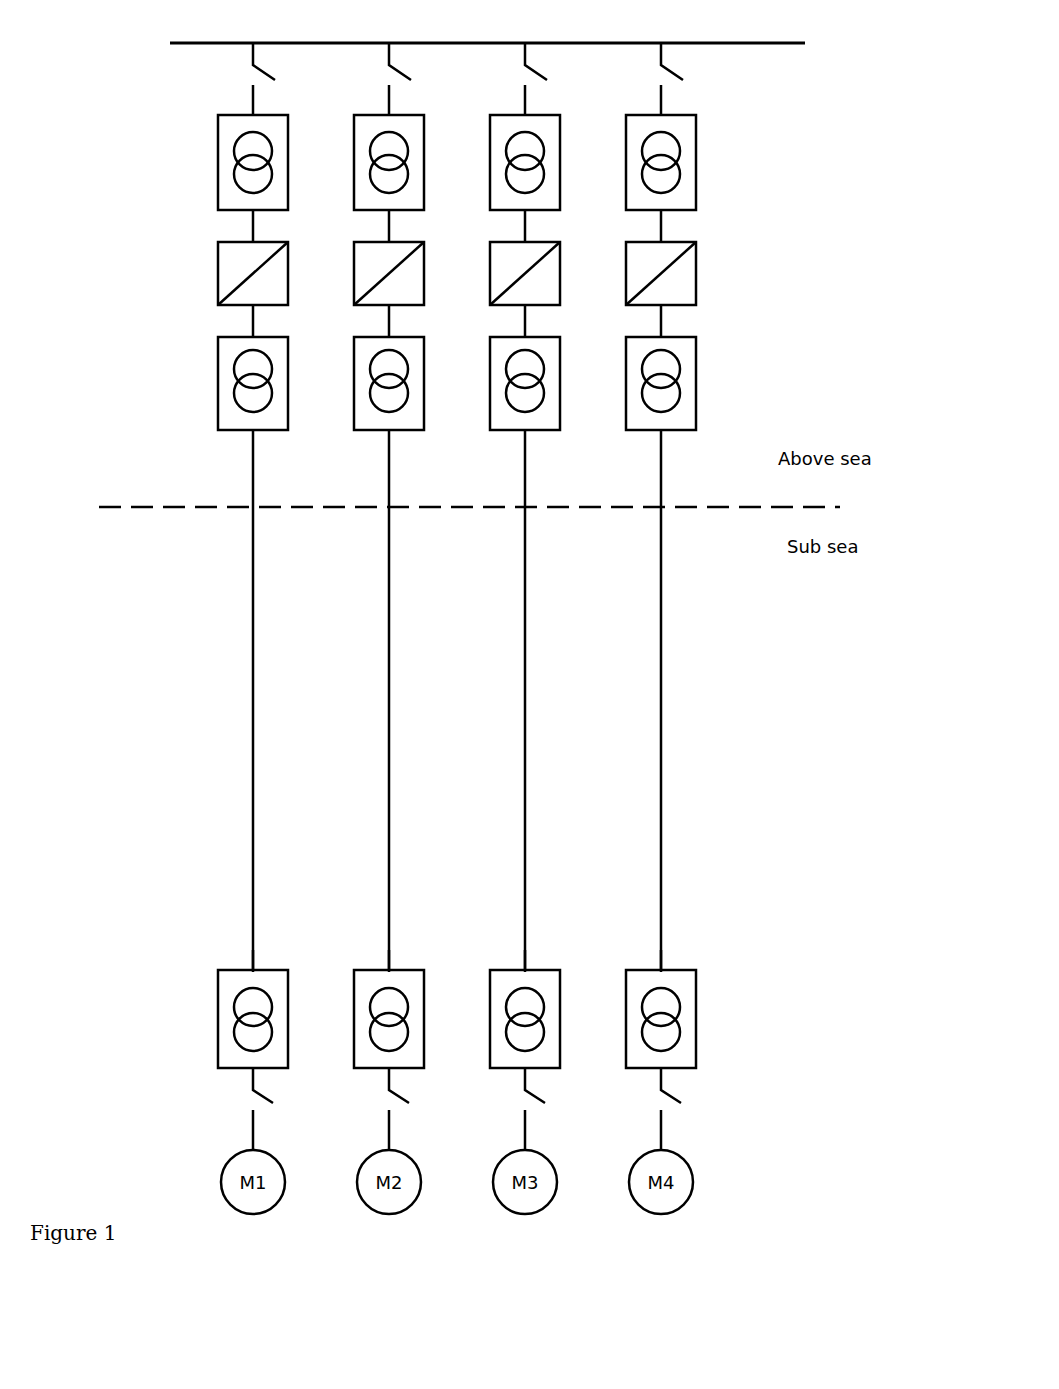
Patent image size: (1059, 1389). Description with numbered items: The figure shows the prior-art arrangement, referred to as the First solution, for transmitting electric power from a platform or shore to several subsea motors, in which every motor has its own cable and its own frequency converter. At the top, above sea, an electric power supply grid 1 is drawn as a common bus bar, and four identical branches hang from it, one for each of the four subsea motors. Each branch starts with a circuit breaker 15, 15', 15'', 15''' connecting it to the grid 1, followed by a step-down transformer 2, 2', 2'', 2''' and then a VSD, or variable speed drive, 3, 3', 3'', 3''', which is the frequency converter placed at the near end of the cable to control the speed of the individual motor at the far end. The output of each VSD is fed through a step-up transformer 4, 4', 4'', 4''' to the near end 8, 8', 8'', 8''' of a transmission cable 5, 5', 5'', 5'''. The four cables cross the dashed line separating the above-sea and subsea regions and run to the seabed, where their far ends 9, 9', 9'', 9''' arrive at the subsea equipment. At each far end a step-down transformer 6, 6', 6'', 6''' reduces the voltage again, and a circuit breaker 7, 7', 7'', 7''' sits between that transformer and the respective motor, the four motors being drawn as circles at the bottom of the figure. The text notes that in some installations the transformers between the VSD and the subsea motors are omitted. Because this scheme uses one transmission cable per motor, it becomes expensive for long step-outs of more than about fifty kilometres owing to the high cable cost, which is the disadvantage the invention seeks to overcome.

The electric power supply grid 1 is at (221, 40).
The circuit breaker 15 is at (279, 61).
The circuit breaker 15' is at (418, 61).
The circuit breaker 15'' is at (556, 61).
The circuit breaker 15''' is at (695, 61).
The step-down transformer 2 is at (244, 142).
The step-down transformer 2' is at (383, 142).
The step-down transformer 2'' is at (515, 142).
The step-down transformer 2''' is at (653, 142).
The VSD, Variable Speed Drive 3 is at (230, 258).
The VSD, Variable Speed Drive 3' is at (378, 258).
The VSD, Variable Speed Drive 3'' is at (512, 258).
The VSD, Variable Speed Drive 3''' is at (650, 258).
The step-up transformer 4 is at (228, 383).
The step-up transformer 4' is at (376, 383).
The step-up transformer 4'' is at (511, 383).
The step-up transformer 4''' is at (647, 383).
The near end of transmission cable 8 is at (214, 452).
The near end of transmission cable 8' is at (351, 452).
The near end of transmission cable 8'' is at (495, 452).
The near end of transmission cable 8''' is at (625, 452).
The transmission cable 5 is at (228, 707).
The transmission cable 5' is at (366, 707).
The transmission cable 5'' is at (500, 707).
The transmission cable 5''' is at (642, 707).
The far end of transmission cable 9 is at (216, 943).
The far end of transmission cable 9' is at (353, 943).
The far end of transmission cable 9'' is at (497, 943).
The far end of transmission cable 9''' is at (628, 943).
The step-down transformer 6 is at (231, 1019).
The step-down transformer 6' is at (371, 1019).
The step-down transformer 6'' is at (507, 1019).
The step-down transformer 6''' is at (644, 1019).
The circuit breaker 7 is at (282, 1085).
The circuit breaker 7' is at (418, 1085).
The circuit breaker 7'' is at (554, 1085).
The circuit breaker 7''' is at (690, 1085).